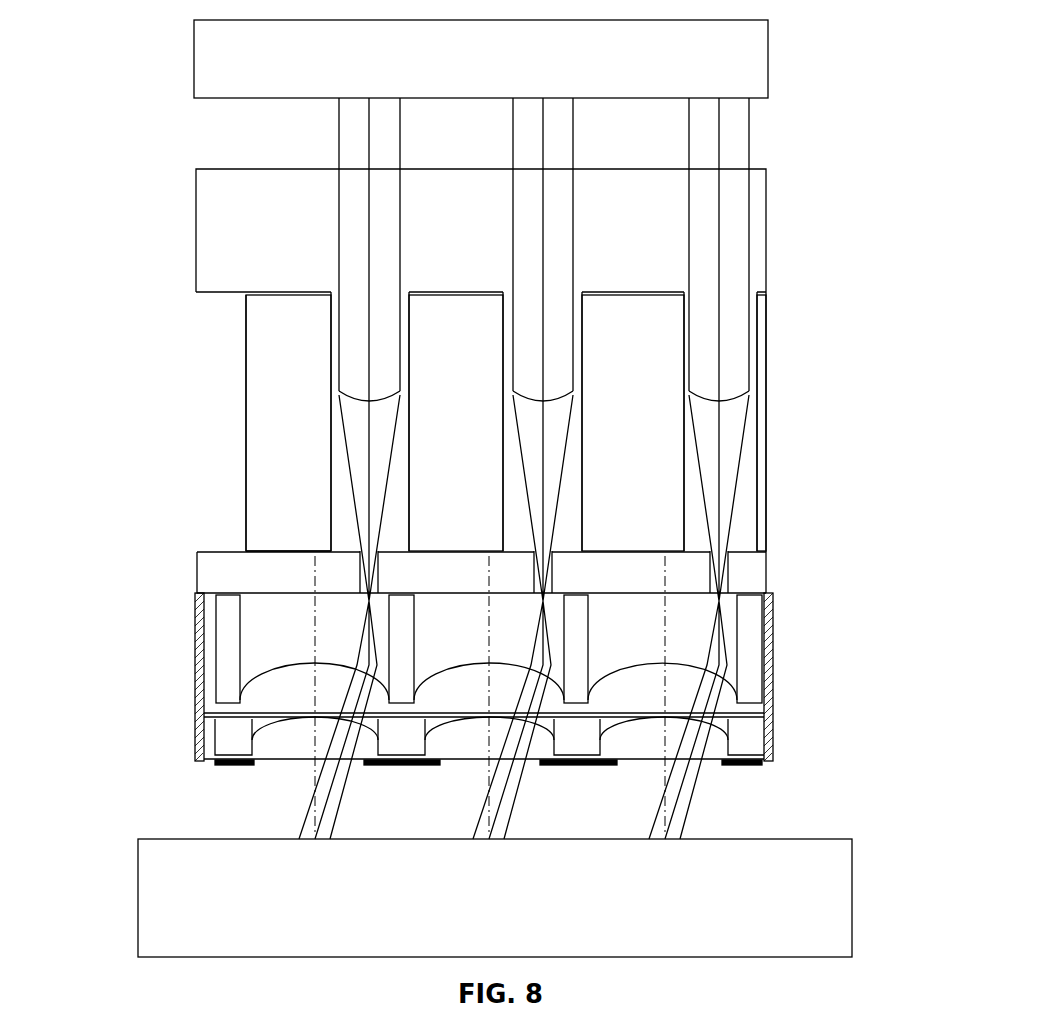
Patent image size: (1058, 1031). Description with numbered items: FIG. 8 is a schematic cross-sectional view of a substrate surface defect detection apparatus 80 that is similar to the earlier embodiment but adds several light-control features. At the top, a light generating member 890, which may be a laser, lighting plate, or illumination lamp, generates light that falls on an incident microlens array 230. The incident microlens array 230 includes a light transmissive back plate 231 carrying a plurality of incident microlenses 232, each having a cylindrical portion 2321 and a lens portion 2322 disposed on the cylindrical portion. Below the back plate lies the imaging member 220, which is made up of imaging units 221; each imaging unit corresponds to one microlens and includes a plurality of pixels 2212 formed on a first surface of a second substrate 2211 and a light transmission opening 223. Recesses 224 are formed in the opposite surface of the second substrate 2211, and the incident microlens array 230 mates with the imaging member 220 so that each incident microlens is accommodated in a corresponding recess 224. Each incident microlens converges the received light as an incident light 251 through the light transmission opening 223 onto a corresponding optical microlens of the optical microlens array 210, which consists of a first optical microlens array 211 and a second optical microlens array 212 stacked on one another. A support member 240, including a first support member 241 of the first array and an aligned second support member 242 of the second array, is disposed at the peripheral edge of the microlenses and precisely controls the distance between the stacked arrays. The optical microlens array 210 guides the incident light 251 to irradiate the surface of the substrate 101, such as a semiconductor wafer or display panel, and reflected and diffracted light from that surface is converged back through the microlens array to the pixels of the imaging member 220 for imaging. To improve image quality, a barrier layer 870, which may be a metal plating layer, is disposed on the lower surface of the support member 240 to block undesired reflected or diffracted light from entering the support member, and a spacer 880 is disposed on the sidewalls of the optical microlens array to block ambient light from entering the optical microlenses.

The substrate surface defect detection apparatus 80 is at (140, 19).
The light generating member 890 is at (753, 57).
The incident microlens array 230 is at (870, 390).
The light transmissive back plate 231 is at (767, 228).
The incident microlens 232 is at (759, 345).
The cylindrical portion 2321 is at (729, 313).
The lens portion 2322 is at (727, 400).
The imaging member 220 is at (115, 296).
The imaging unit 221 is at (405, 460).
The second substrate 2211 is at (265, 535).
The pixels 2212 is at (263, 588).
The recess 224 is at (743, 508).
The light transmission opening 223 is at (730, 578).
The incident light 251 is at (740, 462).
The spacer 880 is at (198, 622).
The optical microlens array 210 is at (119, 635).
The second optical microlens array 212 is at (255, 685).
The first optical microlens array 211 is at (260, 728).
The support member 240 is at (881, 612).
The second support member 242 is at (753, 657).
The first support member 241 is at (753, 742).
The barrier layer 870 is at (390, 765).
The substrate 101 is at (852, 910).